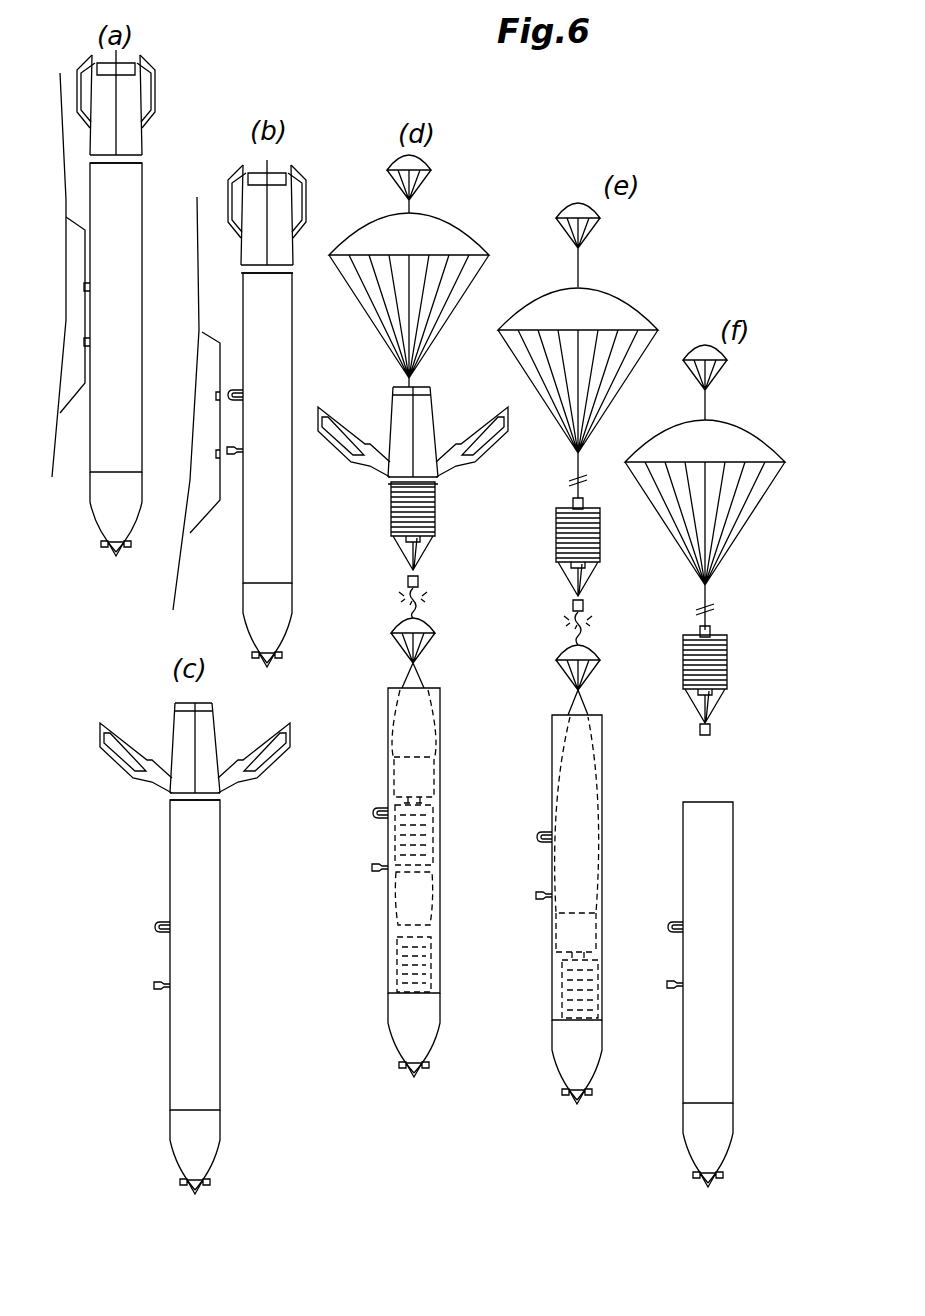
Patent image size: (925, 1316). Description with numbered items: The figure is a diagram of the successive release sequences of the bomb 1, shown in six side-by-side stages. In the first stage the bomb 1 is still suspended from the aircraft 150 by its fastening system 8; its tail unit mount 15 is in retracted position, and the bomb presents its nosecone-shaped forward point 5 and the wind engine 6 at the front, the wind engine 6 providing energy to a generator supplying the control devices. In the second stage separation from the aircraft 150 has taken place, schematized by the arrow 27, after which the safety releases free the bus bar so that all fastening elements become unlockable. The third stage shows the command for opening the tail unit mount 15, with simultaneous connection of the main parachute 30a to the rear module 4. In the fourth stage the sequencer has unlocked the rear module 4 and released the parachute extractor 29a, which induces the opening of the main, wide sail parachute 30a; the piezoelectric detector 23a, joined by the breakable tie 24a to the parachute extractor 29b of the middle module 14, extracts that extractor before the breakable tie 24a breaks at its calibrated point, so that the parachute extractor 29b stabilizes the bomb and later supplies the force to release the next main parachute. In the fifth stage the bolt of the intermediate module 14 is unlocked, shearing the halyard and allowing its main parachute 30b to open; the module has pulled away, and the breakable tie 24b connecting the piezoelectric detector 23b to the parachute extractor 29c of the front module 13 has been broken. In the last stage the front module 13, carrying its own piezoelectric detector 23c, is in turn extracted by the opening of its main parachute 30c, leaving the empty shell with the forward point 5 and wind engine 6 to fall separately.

The bomb 1 is at (143, 237).
The rear module 4 is at (442, 521).
The forward point 5 is at (100, 497).
The wind engine 6 is at (105, 552).
The fastening system 8 is at (158, 925).
The front module 13 is at (440, 968).
The middle module 14 is at (437, 840).
The tail unit mount 15 is at (148, 93).
The piezoelectric detector 23a is at (422, 584).
The piezoelectric detector 23b is at (585, 604).
The piezoelectric detector 23c is at (712, 727).
The breakable tie 24a is at (405, 600).
The breakable tie 24b is at (570, 640).
The arrow 27 is at (232, 425).
The parachute extractor 29a is at (430, 172).
The parachute extractor 29b is at (437, 648).
The parachute extractor 29c is at (598, 662).
The main parachute 30a is at (478, 275).
The main parachute 30b is at (618, 398).
The main parachute 30c is at (756, 505).
The aircraft 150 is at (63, 150).